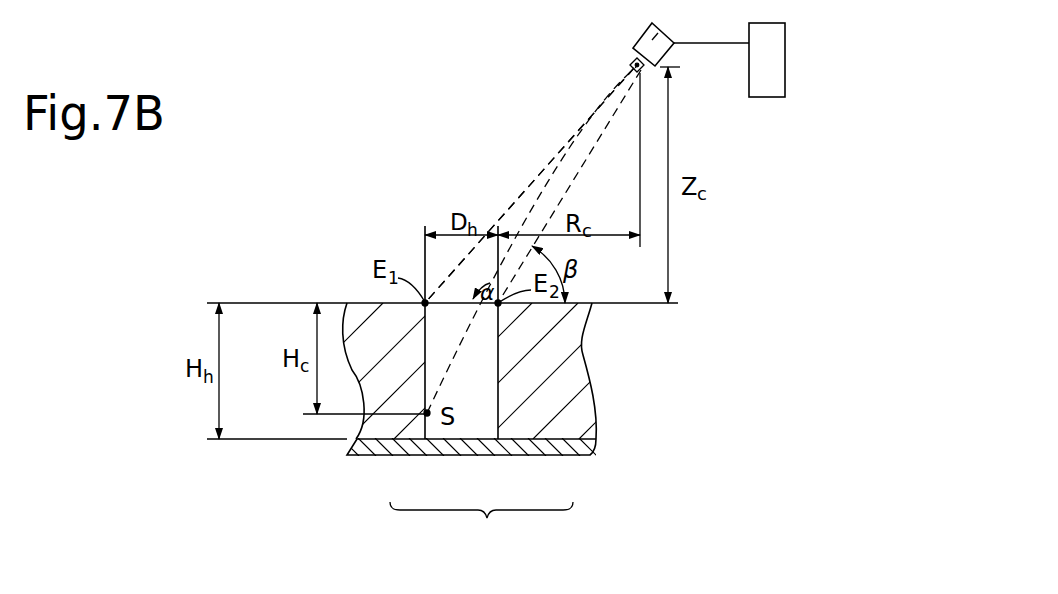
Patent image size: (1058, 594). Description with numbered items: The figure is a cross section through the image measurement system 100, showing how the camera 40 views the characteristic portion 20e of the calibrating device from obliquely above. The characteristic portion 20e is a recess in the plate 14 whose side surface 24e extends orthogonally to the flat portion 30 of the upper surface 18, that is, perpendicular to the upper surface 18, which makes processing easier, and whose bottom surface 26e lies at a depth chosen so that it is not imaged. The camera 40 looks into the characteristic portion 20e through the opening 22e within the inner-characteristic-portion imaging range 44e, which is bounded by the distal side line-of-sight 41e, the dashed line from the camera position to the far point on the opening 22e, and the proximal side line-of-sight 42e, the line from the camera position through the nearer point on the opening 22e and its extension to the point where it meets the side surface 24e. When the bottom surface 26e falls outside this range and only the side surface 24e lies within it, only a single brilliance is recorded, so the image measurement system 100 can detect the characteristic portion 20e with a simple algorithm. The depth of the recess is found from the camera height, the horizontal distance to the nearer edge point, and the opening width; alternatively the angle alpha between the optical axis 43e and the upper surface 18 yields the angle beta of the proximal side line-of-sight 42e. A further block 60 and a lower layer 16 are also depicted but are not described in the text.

The image measurement system 100 is at (829, 88).
The processing unit 60 is at (785, 42).
The camera 40 is at (665, 51).
The flat portion 30 is at (347, 303).
The upper surface 18 is at (578, 302).
The plate 14 is at (591, 387).
The base layer 16 is at (594, 443).
The opening 22e is at (436, 306).
The side surface 24e is at (428, 393).
The bottom surface 26e is at (503, 446).
The characteristic portion 20e is at (481, 529).
The distal side line-of-sight 41e is at (545, 168).
The proximal side line-of-sight 42e is at (593, 140).
The optical axis 43e is at (578, 141).
The inner-characteristic-portion imaging range 44e is at (526, 212).